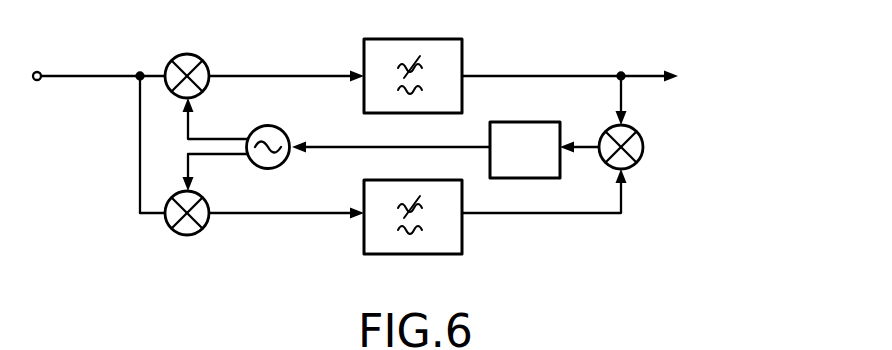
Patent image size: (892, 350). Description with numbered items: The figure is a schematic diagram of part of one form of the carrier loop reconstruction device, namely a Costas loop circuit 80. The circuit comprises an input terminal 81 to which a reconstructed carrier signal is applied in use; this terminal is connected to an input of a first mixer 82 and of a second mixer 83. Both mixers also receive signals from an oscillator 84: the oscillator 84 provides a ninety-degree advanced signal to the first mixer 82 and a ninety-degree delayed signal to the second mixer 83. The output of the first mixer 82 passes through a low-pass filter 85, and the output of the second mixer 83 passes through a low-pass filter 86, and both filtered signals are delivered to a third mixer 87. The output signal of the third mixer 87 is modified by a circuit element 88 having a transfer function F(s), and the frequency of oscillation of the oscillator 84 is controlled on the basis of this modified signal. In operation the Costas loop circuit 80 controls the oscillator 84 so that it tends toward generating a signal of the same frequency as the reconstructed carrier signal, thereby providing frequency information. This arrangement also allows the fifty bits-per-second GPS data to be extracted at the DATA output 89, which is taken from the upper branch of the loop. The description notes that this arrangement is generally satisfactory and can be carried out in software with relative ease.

The Costas loop circuit 80 is at (805, 167).
The input terminal 81 is at (34, 81).
The first mixer 82 is at (189, 53).
The second mixer 83 is at (181, 236).
The oscillator 84 is at (278, 127).
The low-pass filter 85 is at (430, 38).
The low-pass filter 86 is at (400, 255).
The third mixer 87 is at (638, 163).
The circuit element 88 is at (513, 122).
The DATA output 89 is at (667, 68).